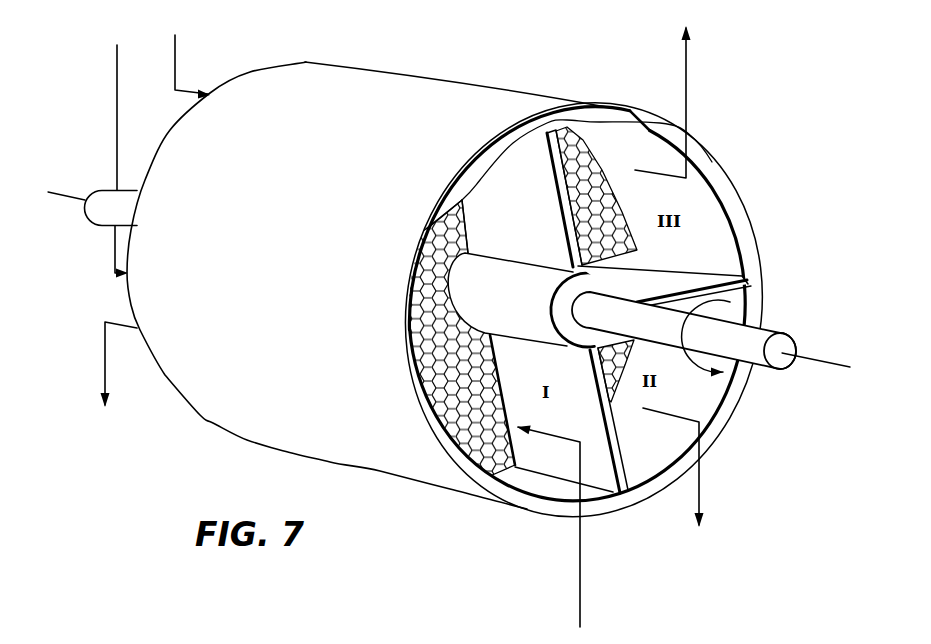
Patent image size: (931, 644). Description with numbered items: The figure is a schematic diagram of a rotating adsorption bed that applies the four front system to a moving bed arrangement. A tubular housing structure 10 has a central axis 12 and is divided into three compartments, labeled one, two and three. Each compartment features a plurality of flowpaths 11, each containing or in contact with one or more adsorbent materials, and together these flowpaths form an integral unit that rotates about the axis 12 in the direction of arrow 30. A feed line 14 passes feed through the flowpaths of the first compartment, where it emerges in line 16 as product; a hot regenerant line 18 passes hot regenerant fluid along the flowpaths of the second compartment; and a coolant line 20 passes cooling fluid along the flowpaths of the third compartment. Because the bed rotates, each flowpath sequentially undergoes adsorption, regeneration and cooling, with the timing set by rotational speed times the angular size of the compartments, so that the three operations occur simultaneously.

The tubular housing structure 10 is at (341, 169).
The flowpaths 11 is at (450, 368).
The central axis 12 is at (67, 197).
The feed line 14 is at (578, 555).
The product line 16 is at (105, 360).
The hot regenerant line 18 is at (702, 498).
The coolant line 20 is at (686, 98).
The arrow indicating direction of rotation 30 is at (725, 300).